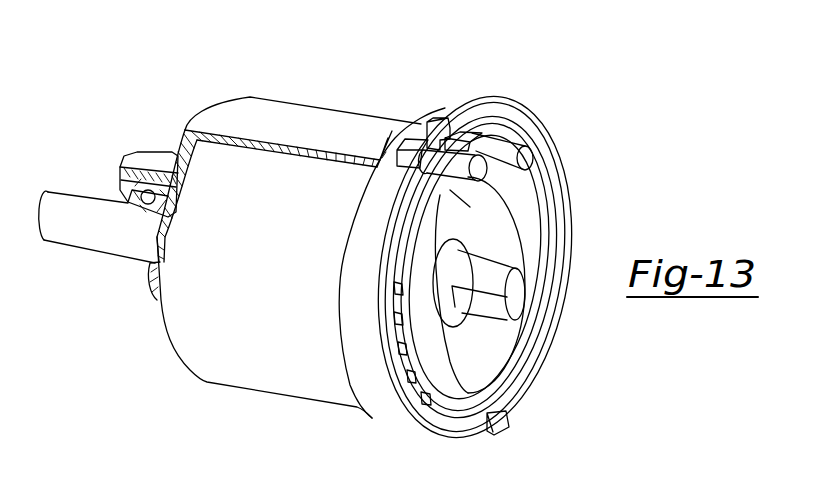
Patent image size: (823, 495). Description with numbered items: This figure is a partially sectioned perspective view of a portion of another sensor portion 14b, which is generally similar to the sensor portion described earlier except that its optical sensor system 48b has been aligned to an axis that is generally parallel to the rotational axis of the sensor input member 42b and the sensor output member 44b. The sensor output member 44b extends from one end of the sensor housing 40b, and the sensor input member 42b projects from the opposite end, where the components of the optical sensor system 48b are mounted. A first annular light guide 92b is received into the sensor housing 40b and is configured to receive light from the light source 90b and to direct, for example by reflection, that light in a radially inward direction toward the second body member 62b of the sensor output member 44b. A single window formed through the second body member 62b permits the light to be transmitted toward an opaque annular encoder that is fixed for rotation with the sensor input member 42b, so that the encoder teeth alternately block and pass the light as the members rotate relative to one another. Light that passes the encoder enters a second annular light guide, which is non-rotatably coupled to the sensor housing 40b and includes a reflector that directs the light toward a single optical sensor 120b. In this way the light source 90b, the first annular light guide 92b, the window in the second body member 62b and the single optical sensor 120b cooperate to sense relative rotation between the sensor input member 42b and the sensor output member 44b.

The sensor portion 14b is at (362, 74).
The sensor housing 40b is at (321, 122).
The second body member 62b is at (230, 374).
The first annular light guide 92b is at (357, 264).
The sensor output member 44b is at (75, 240).
The optical sensor system 48b is at (495, 122).
The sensor input member 42b is at (516, 300).
The single optical sensor 120b is at (506, 148).
The light source 90b is at (484, 177).